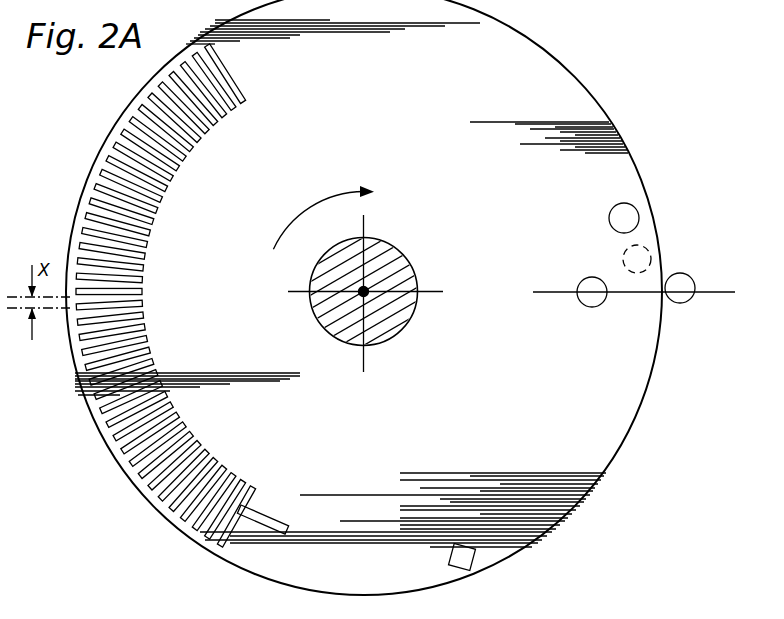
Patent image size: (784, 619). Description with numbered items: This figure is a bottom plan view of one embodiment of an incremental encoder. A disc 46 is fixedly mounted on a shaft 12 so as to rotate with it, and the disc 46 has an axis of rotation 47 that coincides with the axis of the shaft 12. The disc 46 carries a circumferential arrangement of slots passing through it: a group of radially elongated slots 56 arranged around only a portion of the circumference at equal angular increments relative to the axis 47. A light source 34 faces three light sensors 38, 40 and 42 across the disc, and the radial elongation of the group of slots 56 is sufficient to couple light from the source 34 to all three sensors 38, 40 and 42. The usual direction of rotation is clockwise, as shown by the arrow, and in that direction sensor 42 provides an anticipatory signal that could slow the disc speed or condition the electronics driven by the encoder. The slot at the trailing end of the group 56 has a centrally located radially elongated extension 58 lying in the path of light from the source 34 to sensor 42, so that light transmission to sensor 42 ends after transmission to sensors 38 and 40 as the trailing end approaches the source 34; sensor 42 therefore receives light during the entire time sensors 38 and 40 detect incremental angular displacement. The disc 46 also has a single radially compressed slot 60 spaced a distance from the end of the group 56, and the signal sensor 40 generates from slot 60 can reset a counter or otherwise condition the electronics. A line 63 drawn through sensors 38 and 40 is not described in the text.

The shaft 12 is at (403, 270).
The light source 34 is at (645, 243).
The light sensor 38 is at (583, 307).
The light sensor 40 is at (692, 276).
The light sensor 42 is at (620, 203).
The disc 46 is at (630, 408).
The axis of rotation 47 is at (372, 284).
The group of radially elongated slots 56 is at (128, 456).
The radially elongated extension 58 is at (283, 520).
The radially compressed slot 60 is at (472, 548).
The reference line 63 is at (720, 292).